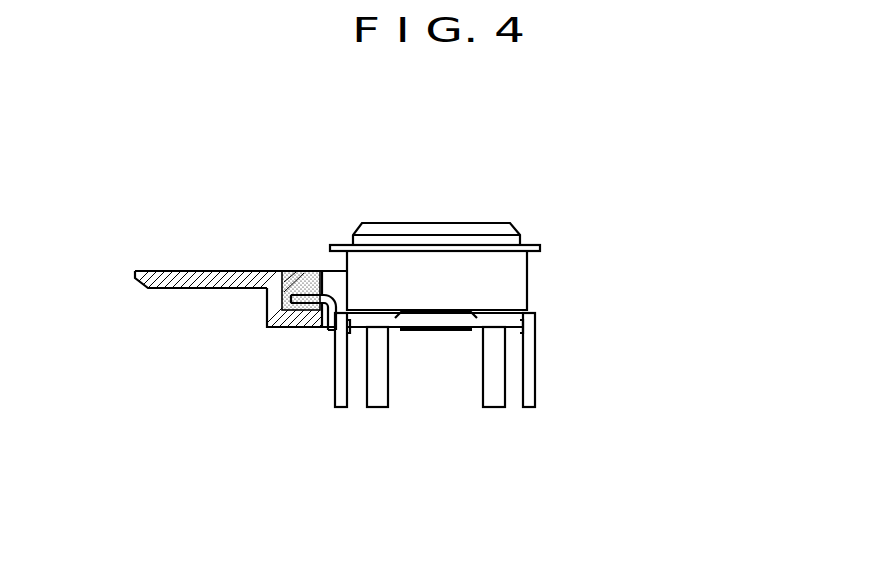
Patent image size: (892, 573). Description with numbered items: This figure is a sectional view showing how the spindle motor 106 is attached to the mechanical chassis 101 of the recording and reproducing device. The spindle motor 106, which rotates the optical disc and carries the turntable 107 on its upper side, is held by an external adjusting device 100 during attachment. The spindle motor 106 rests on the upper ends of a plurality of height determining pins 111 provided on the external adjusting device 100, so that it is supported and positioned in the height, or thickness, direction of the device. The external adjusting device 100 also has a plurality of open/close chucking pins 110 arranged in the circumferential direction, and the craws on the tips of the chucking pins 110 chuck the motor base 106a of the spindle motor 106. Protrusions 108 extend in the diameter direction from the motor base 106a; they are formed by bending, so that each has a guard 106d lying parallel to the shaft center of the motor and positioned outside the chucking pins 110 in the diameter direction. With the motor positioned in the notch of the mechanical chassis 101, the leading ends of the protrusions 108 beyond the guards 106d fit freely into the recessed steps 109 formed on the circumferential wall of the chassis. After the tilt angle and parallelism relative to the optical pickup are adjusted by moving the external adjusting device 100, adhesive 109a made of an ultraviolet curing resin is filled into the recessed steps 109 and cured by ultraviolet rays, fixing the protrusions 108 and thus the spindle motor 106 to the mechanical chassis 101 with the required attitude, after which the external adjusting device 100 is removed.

The external adjusting device 100 is at (552, 375).
The mechanical chassis 101 is at (167, 270).
The spindle motor 106 is at (442, 230).
The motor base 106a is at (437, 330).
The guard 106d is at (312, 328).
The turntable 107 is at (535, 252).
The protrusion 108 is at (313, 288).
The recessed step 109 is at (316, 292).
The adhesive 109a is at (298, 288).
The chucking pin 110 is at (333, 391).
The height determining pin 111 is at (375, 390).